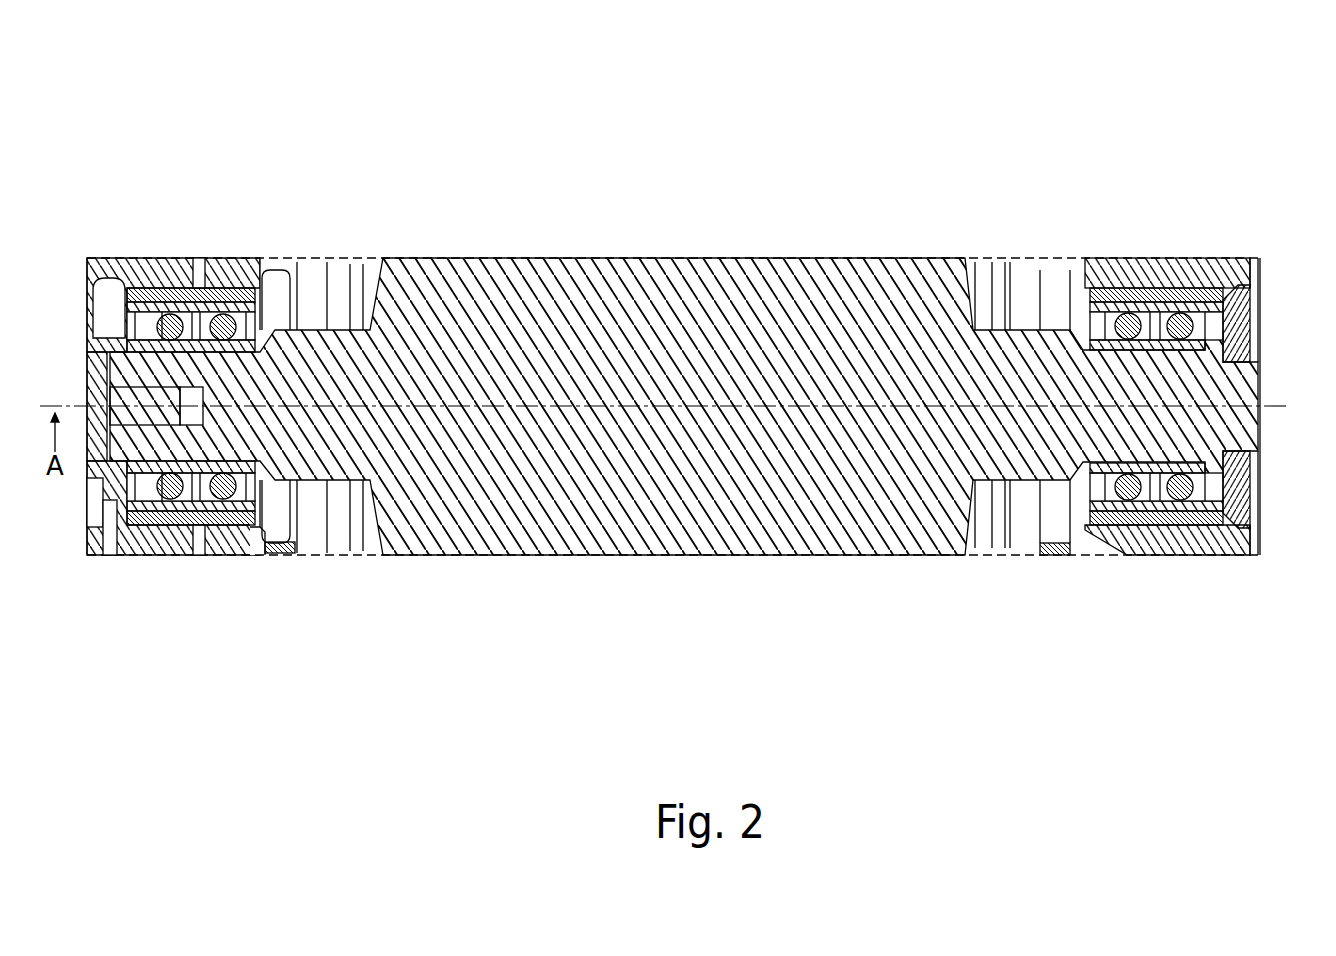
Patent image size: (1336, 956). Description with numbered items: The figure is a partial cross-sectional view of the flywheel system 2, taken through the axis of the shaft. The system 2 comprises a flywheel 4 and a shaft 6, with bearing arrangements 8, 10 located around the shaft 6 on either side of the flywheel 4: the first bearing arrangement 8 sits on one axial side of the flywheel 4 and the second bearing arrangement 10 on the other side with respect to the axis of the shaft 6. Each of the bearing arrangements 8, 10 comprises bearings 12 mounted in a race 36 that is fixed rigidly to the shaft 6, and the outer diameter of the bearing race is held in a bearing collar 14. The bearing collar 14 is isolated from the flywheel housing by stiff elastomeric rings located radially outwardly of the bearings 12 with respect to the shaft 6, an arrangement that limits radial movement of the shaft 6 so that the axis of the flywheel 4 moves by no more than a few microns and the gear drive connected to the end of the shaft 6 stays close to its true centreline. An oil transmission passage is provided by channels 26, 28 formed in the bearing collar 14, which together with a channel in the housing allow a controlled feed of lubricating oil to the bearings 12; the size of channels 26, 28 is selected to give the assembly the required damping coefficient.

The system 2 is at (531, 134).
The flywheel 4 is at (688, 257).
The shaft 6 is at (1256, 388).
The first bearing arrangement 8 is at (108, 239).
The second bearing arrangement 10 is at (1234, 238).
The bearings 12 is at (223, 258).
The bearing collar 14 is at (258, 258).
The channel 26 is at (194, 258).
The channel 28 is at (196, 556).
The race 36 is at (95, 345).